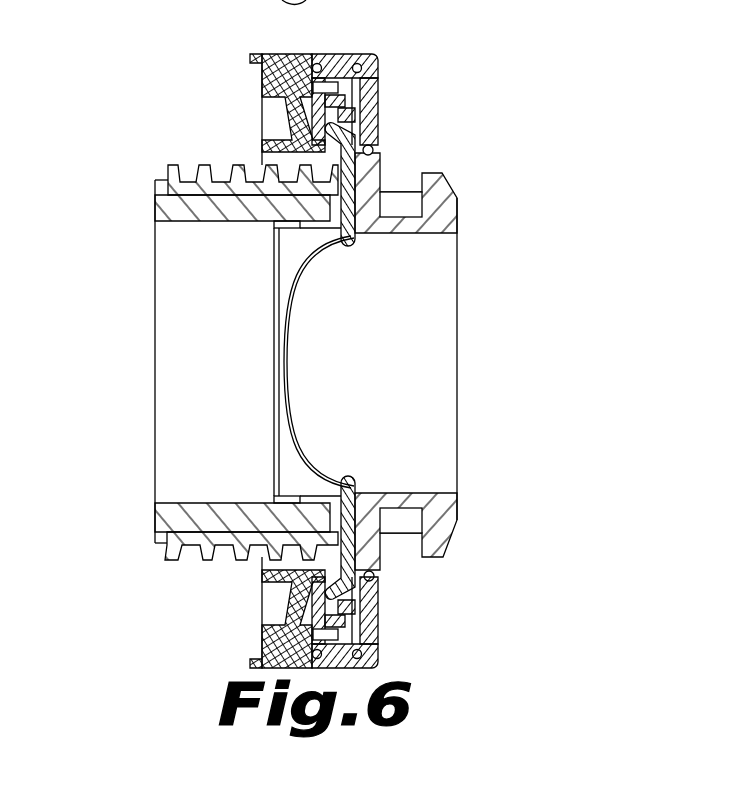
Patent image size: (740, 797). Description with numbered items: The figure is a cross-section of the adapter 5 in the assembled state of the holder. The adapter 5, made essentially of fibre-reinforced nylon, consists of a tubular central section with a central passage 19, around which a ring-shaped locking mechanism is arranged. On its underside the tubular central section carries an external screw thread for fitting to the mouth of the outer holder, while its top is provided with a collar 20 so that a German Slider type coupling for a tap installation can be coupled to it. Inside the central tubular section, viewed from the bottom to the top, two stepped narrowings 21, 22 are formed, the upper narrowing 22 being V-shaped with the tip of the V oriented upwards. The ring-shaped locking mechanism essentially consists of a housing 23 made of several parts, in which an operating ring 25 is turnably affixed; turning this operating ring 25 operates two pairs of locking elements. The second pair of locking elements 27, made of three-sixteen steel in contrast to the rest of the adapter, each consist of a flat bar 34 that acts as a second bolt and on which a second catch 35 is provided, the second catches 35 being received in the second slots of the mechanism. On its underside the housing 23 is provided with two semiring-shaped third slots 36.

The adapter 5 is at (565, 130).
The central passage 19 is at (367, 362).
The collar 20 is at (440, 197).
The stepped narrowing 21 is at (276, 467).
The V-shaped narrowing 22 is at (300, 300).
The housing 23 is at (288, 62).
The operating ring 25 is at (337, 56).
The second pair of locking elements 27 is at (362, 555).
The flat bar 34 is at (356, 494).
The second catch 35 is at (327, 597).
The semiring-shaped third slot 36 is at (273, 605).